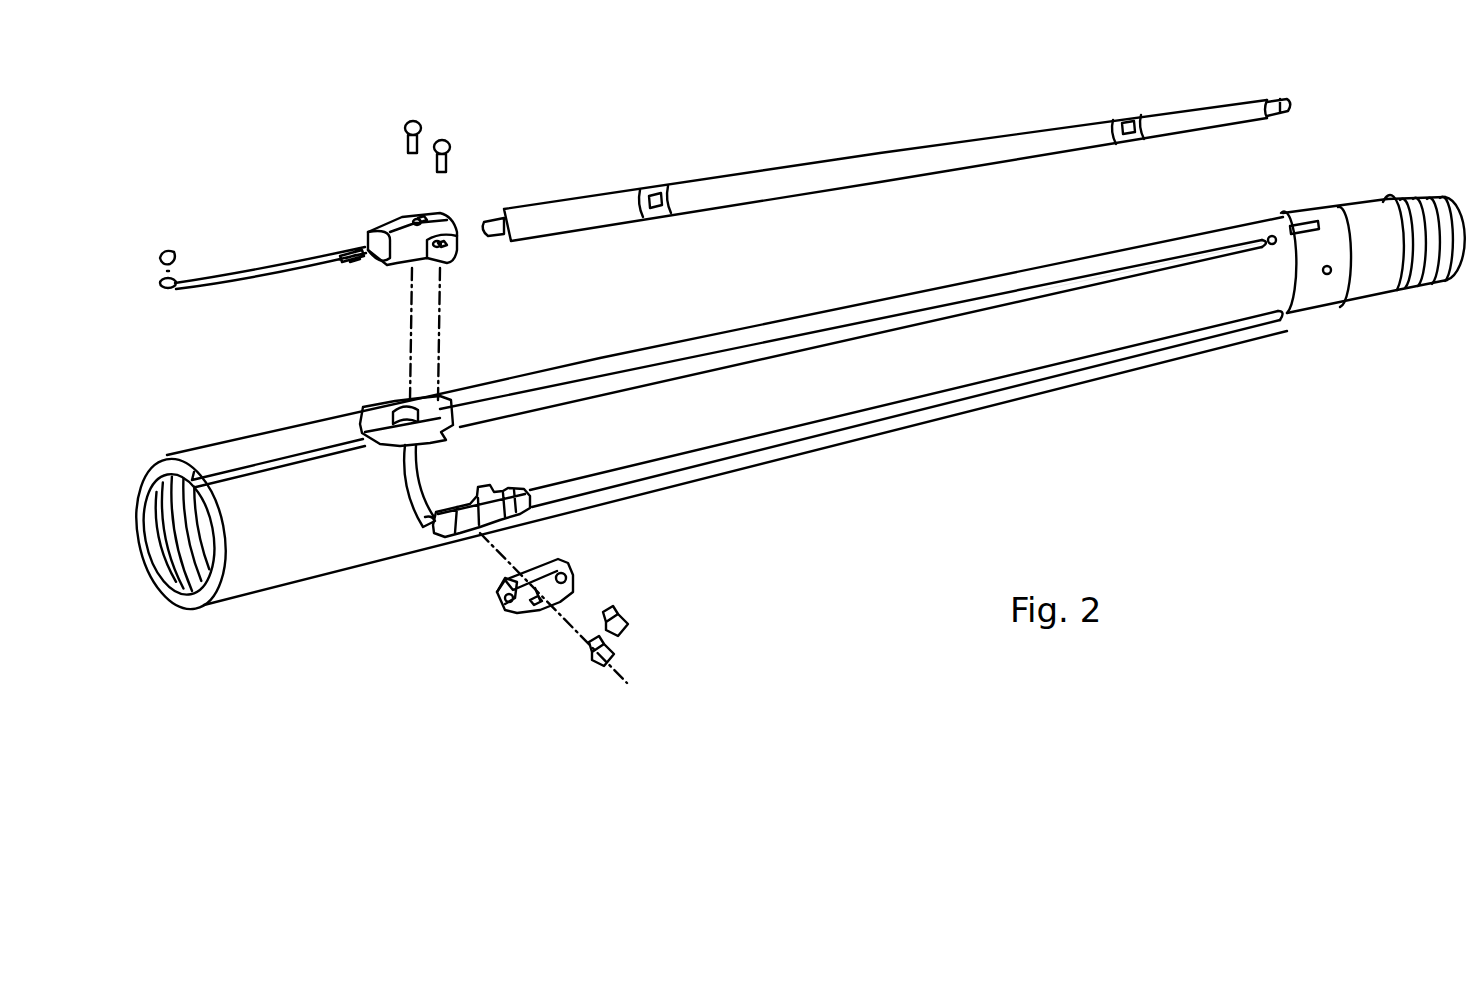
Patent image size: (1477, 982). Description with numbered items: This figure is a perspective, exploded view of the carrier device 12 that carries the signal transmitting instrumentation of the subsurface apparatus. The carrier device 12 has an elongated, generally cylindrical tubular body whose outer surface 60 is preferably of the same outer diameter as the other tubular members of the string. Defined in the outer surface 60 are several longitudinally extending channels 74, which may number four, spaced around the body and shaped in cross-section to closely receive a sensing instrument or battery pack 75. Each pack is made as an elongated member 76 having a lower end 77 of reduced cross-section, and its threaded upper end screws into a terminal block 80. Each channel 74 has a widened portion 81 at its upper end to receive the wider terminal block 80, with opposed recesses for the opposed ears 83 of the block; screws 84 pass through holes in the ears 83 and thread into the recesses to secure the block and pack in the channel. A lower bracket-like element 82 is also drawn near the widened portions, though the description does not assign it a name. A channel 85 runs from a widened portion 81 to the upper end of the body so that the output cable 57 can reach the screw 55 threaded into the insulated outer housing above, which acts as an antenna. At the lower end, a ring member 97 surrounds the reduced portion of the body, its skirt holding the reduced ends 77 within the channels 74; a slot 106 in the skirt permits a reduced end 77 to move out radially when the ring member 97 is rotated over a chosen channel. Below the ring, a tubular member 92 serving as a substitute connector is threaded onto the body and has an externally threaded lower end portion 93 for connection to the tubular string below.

The carrier device 12 is at (1152, 172).
The screw 55 is at (180, 264).
The output cable 57 is at (305, 273).
The outer surface 60 is at (263, 570).
The channels 74 is at (1043, 370).
The sensing instrument or battery pack 75 is at (905, 140).
The elongated member 76 is at (862, 162).
The lower end of reduced cross-section 77 is at (1290, 102).
The terminal block 80 is at (397, 237).
The widened portion 81 is at (388, 404).
The lower bracket 82 is at (471, 537).
The ears 83 is at (415, 217).
The screws 84 is at (448, 138).
The channel 85 is at (298, 451).
The tubular member 92 is at (1368, 290).
The lower end portion 93 is at (1400, 197).
The ring member 97 is at (1317, 300).
The slot 106 is at (1300, 225).